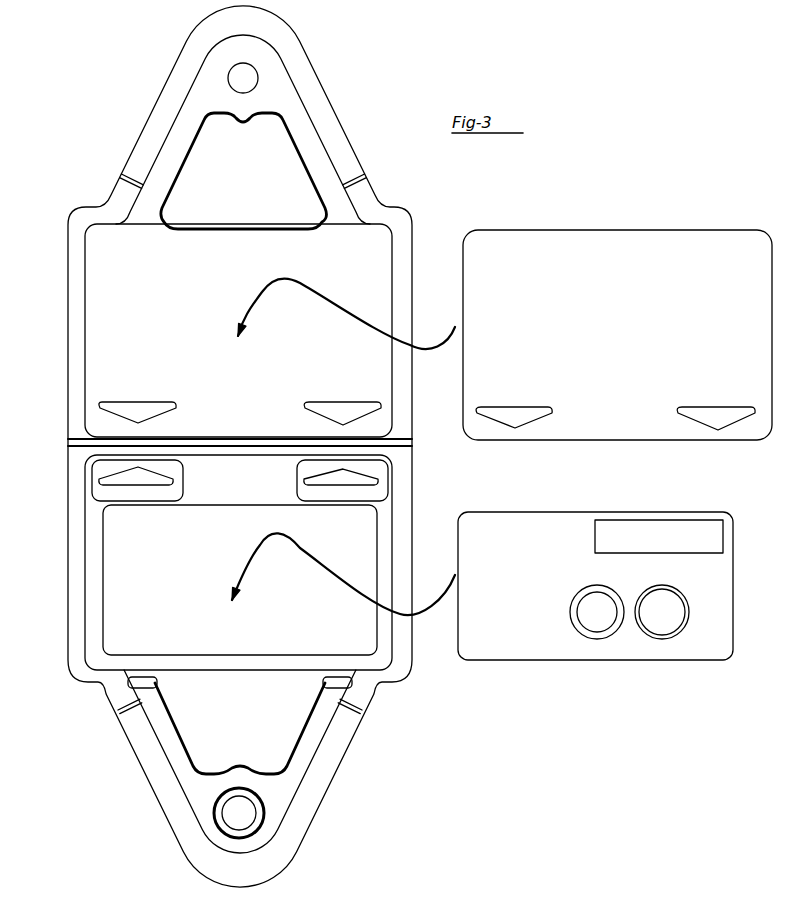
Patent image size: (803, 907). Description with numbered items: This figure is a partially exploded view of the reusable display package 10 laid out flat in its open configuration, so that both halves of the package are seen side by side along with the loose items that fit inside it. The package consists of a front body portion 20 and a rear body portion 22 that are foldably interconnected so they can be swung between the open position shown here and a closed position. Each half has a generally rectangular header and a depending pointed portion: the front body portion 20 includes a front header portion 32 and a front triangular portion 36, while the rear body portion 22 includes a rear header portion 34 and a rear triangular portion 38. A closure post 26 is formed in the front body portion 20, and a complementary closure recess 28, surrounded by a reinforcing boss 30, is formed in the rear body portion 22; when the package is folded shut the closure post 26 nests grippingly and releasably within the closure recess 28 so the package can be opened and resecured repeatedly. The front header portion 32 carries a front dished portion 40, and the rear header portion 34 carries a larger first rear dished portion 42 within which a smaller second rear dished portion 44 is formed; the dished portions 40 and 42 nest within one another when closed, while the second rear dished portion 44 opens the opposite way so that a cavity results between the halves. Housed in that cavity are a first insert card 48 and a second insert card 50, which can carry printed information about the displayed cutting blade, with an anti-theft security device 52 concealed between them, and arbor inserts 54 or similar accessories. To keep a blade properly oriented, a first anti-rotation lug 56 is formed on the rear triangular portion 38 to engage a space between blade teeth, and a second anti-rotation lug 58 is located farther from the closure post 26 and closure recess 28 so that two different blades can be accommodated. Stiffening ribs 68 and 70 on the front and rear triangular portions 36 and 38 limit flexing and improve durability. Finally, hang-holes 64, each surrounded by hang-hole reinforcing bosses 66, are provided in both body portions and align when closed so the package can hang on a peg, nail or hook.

The reusable display package 10 is at (147, 58).
The front body portion 20 is at (403, 215).
The rear body portion 22 is at (399, 688).
The closure post 26 is at (258, 76).
The closure recess 28 is at (232, 823).
The reinforcing boss 30 is at (257, 800).
The front header portion 32 is at (75, 360).
The rear header portion 34 is at (67, 642).
The front triangular portion 36 is at (327, 115).
The rear triangular portion 38 is at (345, 732).
The front dished portion 40 is at (102, 277).
The first rear dished portion 42 is at (93, 520).
The second rear dished portion 44 is at (117, 560).
The first insert card 48 is at (643, 243).
The second insert card 50 is at (697, 598).
The anti-theft security device 52 is at (695, 530).
The arbor inserts 54 is at (670, 637).
The first anti-rotation lug 56 is at (148, 708).
The second anti-rotation lug 58 is at (147, 197).
The hang-holes 64 is at (130, 413).
The hang-hole reinforcing bosses 66 is at (128, 494).
The stiffening ribs 68 is at (181, 127).
The stiffening ribs 70 is at (178, 768).